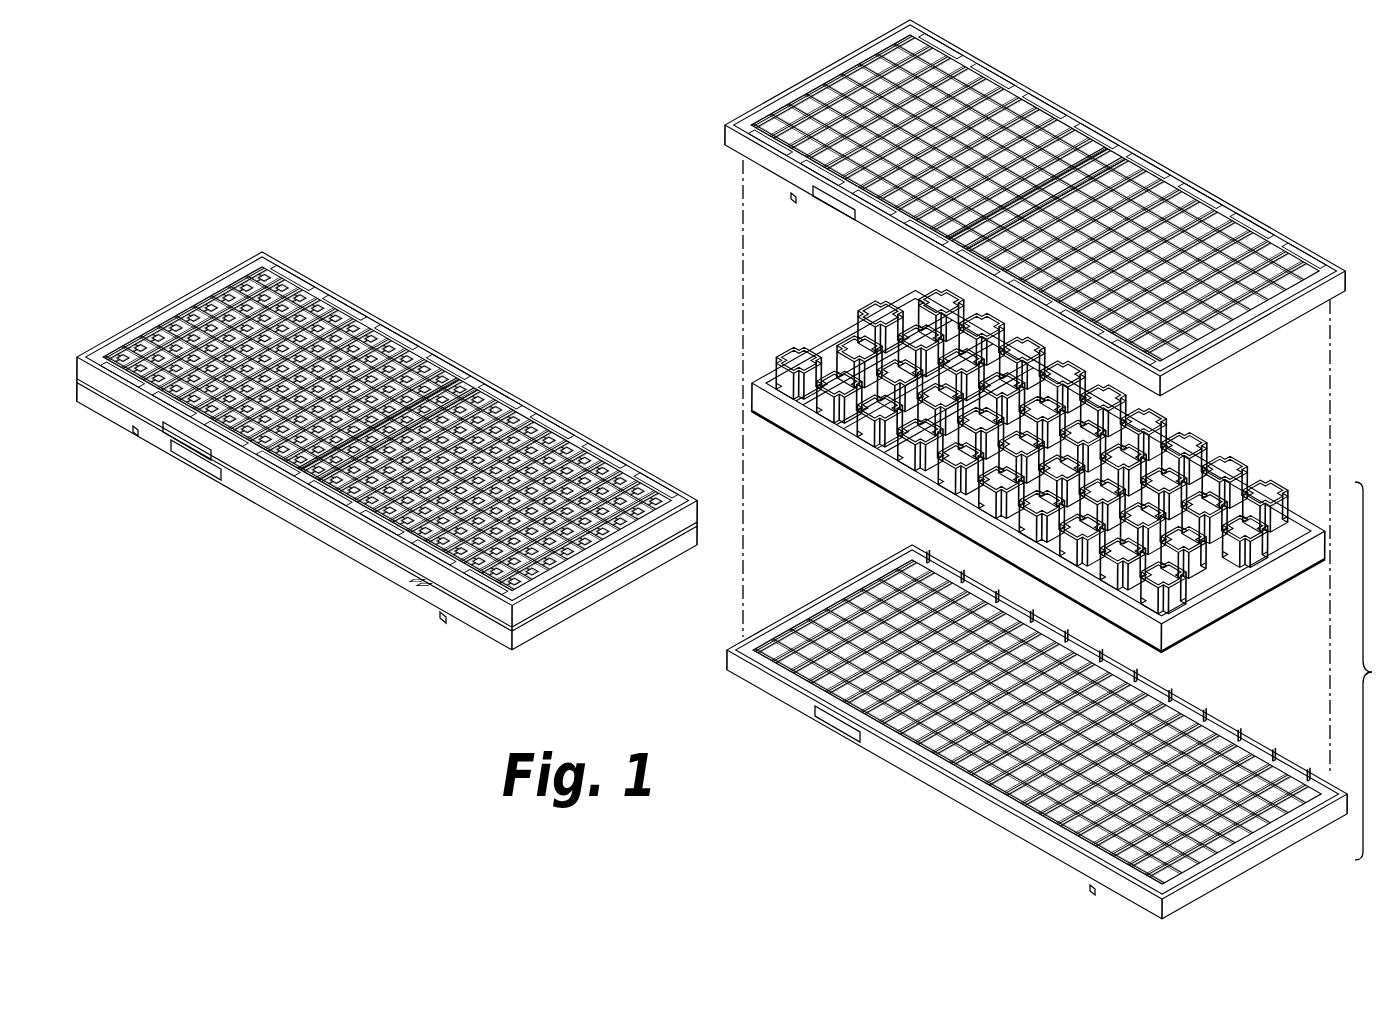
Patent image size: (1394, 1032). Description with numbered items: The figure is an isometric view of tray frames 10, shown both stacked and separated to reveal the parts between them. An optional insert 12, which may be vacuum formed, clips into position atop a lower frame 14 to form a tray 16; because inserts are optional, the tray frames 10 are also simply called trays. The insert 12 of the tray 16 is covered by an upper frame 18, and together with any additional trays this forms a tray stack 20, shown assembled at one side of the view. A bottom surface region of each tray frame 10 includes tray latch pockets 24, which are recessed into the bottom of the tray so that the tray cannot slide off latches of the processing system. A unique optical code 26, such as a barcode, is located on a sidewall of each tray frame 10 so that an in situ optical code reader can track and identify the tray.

The tray frame 10 is at (805, 469).
The insert 12 is at (1258, 578).
The lower frame 14 is at (902, 780).
The tray 16 is at (1052, 597).
The upper frame 18 is at (1125, 140).
The tray stack 20 is at (432, 293).
The tray latch pocket 24 is at (138, 430).
The optical code 26 is at (182, 458).